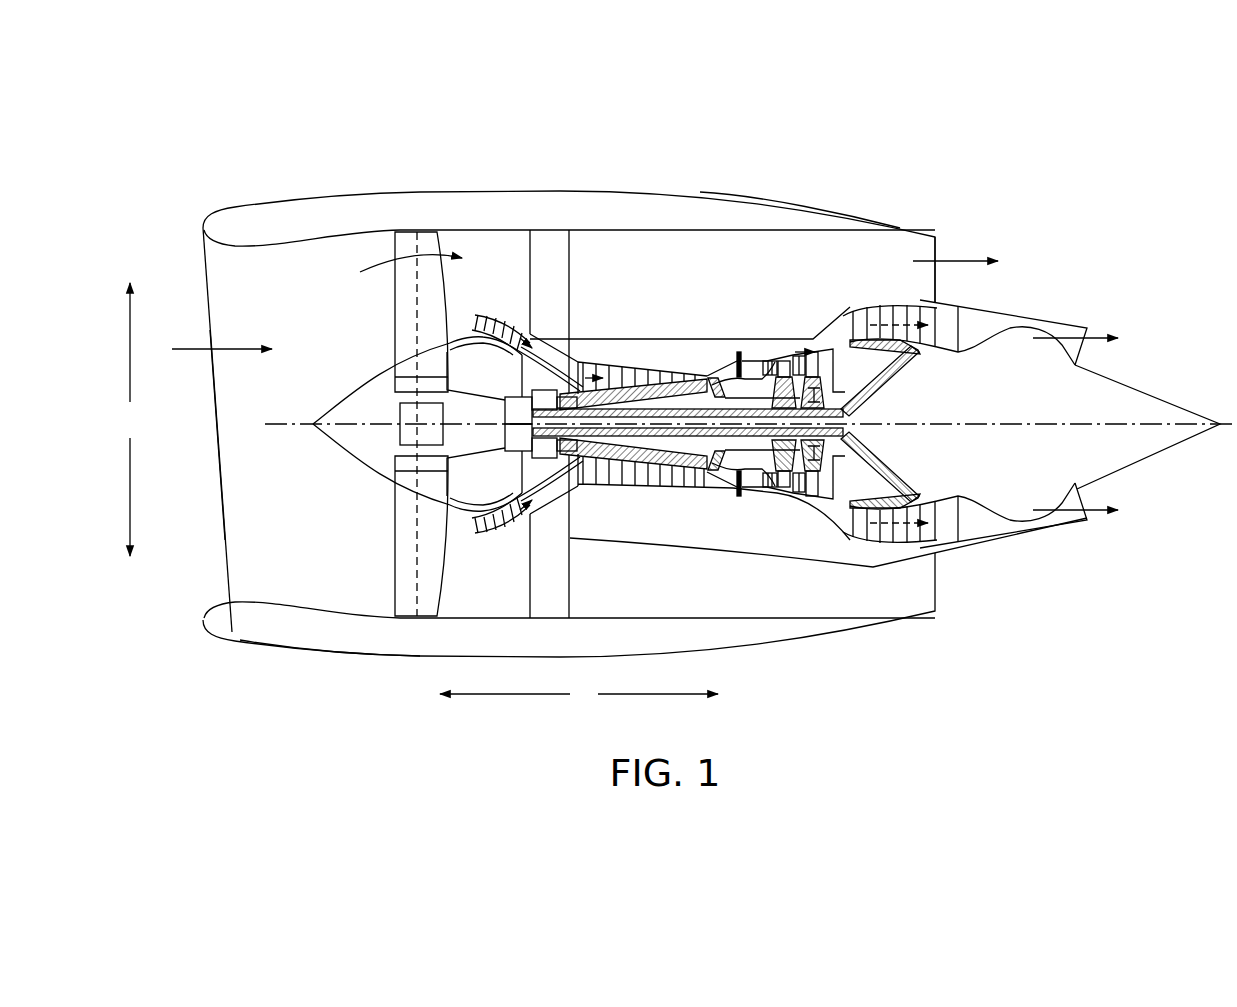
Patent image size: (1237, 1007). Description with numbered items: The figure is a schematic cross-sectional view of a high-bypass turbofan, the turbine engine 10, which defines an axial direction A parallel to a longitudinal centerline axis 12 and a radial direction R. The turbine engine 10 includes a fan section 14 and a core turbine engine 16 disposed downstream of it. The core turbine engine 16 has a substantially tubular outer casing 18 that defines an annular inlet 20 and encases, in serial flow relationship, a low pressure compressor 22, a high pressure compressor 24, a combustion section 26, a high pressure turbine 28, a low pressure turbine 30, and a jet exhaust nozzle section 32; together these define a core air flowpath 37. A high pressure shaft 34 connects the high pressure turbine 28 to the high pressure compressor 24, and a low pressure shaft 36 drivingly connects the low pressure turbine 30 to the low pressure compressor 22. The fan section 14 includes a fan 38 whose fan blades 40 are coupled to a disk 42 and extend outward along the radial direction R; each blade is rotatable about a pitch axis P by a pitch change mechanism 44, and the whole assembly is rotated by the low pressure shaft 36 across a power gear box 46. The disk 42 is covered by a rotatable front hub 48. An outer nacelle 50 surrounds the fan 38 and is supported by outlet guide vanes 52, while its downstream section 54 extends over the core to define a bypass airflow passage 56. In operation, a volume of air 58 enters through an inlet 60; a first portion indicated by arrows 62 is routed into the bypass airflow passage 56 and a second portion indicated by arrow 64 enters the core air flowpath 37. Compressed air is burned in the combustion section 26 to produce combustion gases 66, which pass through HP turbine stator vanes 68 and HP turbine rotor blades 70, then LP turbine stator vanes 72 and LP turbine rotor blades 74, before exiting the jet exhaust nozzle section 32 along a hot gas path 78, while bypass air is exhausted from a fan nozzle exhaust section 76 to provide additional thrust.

The turbine engine 10 is at (1110, 148).
The longitudinal centerline axis 12 is at (1018, 423).
The fan section 14 is at (348, 243).
The core turbine engine 16 is at (652, 340).
The outer casing 18 is at (772, 561).
The annular inlet 20 is at (468, 530).
The low pressure (LP) compressor 22 is at (547, 481).
The high pressure (HP) compressor 24 is at (607, 485).
The combustion section 26 is at (752, 487).
The high pressure (HP) turbine 28 is at (822, 491).
The low pressure (LP) turbine 30 is at (923, 546).
The jet exhaust nozzle section 32 is at (981, 518).
The high pressure (HP) shaft 34 is at (735, 392).
The low pressure (LP) shaft 36 is at (862, 400).
The core air flowpath 37 is at (551, 496).
The fan 38 is at (384, 481).
The fan blades 40 is at (393, 580).
The disk 42 is at (397, 380).
The pitch change mechanism 44 is at (400, 413).
The power gear box 46 is at (513, 397).
The front hub 48 is at (333, 447).
The outer nacelle 50 is at (292, 650).
The outlet guide vanes 52 is at (574, 271).
The downstream section 54 is at (812, 209).
The bypass airflow passage 56 is at (734, 278).
The volume of air 58 is at (196, 348).
The inlet 60 is at (230, 578).
The arrows indicating first portion of air 62 is at (372, 278).
The arrow indicating second portion of air 64 is at (476, 317).
The combustion gases 66 is at (803, 352).
The HP turbine stator vanes 68 is at (771, 490).
The HP turbine rotor blades 70 is at (838, 464).
The LP turbine stator vanes 72 is at (857, 528).
The LP turbine rotor blades 74 is at (868, 531).
The fan nozzle exhaust section 76 is at (936, 243).
The hot gas path 78 is at (598, 338).
The pitch axis P is at (420, 243).
The radial direction R is at (130, 419).
The axial direction A is at (579, 695).